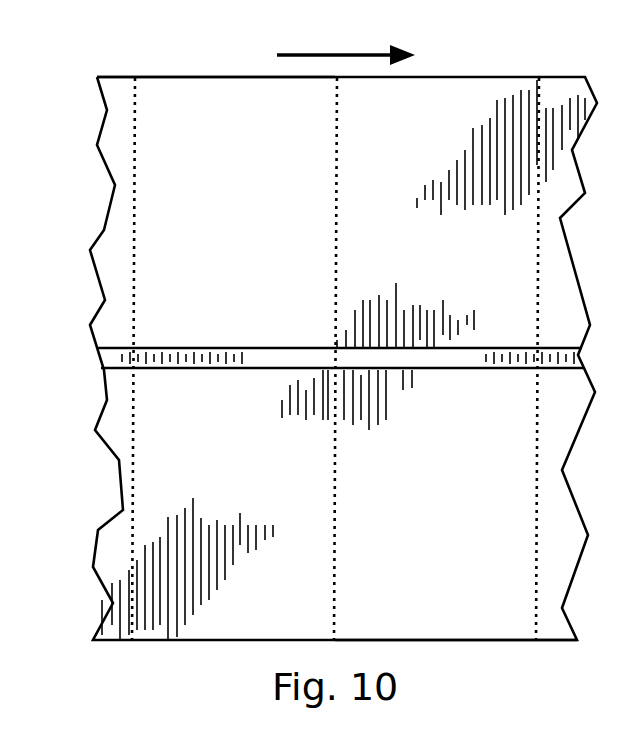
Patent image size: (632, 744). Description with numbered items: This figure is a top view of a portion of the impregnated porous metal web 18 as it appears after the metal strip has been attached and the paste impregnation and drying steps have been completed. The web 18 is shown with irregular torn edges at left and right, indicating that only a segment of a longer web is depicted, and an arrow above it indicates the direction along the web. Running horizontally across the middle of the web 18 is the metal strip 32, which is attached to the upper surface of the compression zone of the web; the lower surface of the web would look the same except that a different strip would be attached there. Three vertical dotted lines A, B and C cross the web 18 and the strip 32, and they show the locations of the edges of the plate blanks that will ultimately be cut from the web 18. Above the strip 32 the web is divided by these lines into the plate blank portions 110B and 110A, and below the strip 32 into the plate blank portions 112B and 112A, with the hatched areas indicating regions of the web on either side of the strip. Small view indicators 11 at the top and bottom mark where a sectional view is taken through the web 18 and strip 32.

The impregnated porous metal web 18 is at (80, 480).
The metal strip 32 is at (283, 358).
The plate blank portion 110A is at (461, 214).
The plate blank portion 110B is at (216, 151).
The plate blank portion 112A is at (456, 564).
The plate blank portion 112B is at (257, 505).
The dotted line A is at (135, 270).
The dotted line B is at (335, 306).
The dotted line C is at (538, 310).
The section view 11-11 indicator 11 is at (472, 36).